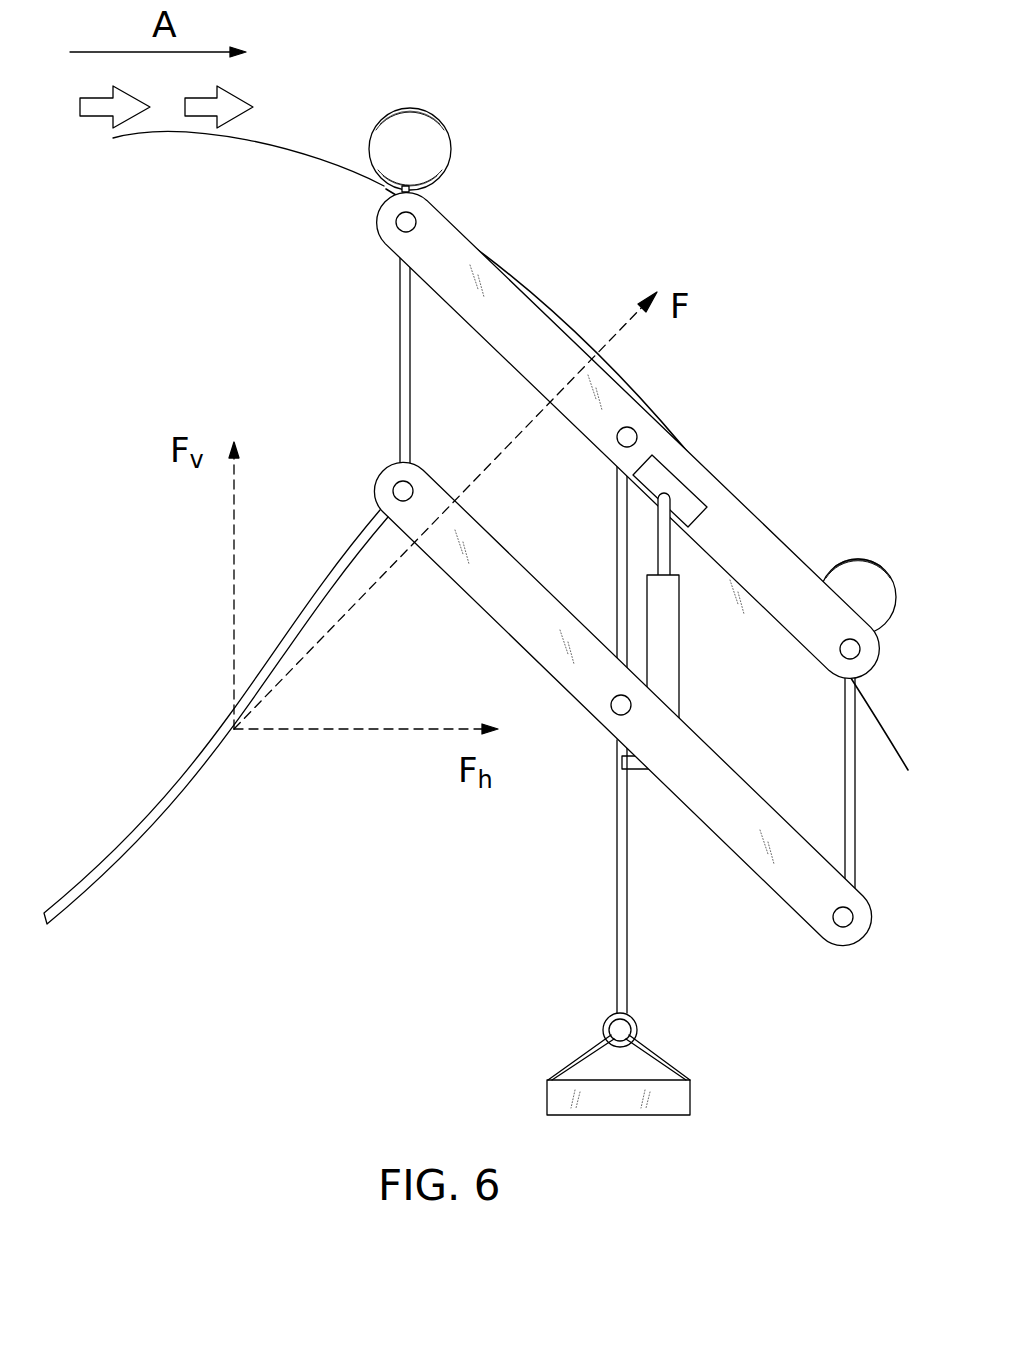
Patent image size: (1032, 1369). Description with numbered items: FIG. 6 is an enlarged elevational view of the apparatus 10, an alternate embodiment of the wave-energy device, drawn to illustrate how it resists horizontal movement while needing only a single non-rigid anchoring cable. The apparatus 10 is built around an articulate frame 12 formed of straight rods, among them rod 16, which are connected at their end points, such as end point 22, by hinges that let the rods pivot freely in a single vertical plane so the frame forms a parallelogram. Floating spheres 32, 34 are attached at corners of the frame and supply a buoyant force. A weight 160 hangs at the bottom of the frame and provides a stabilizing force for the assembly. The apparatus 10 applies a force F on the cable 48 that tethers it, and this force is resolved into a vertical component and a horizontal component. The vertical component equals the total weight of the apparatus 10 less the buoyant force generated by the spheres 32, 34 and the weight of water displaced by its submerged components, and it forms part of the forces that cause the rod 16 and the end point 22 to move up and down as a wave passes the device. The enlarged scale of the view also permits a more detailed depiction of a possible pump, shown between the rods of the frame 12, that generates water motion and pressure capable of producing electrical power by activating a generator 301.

The apparatus 10 is at (365, 357).
The articulate frame 12 is at (720, 502).
The rod 16 is at (405, 424).
The end point 22 is at (848, 733).
The floating sphere 32 is at (437, 152).
The floating sphere 34 is at (872, 572).
The cable 48 is at (168, 783).
The weight 160 is at (691, 1098).
The generator 301 is at (660, 663).